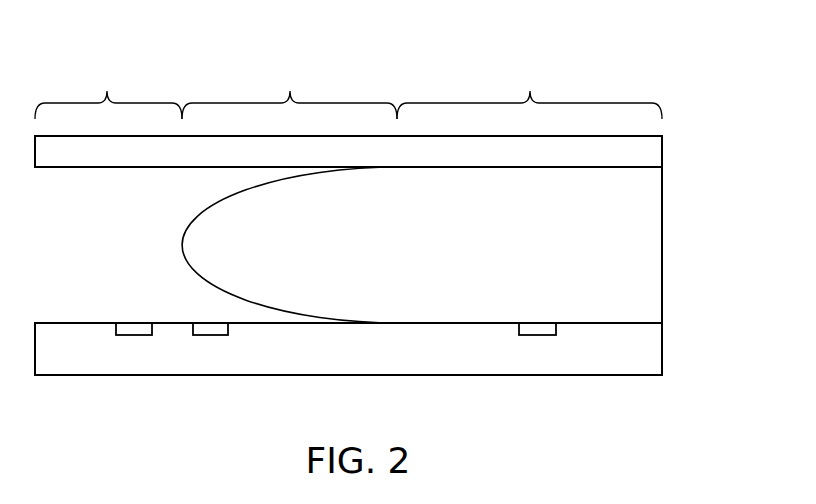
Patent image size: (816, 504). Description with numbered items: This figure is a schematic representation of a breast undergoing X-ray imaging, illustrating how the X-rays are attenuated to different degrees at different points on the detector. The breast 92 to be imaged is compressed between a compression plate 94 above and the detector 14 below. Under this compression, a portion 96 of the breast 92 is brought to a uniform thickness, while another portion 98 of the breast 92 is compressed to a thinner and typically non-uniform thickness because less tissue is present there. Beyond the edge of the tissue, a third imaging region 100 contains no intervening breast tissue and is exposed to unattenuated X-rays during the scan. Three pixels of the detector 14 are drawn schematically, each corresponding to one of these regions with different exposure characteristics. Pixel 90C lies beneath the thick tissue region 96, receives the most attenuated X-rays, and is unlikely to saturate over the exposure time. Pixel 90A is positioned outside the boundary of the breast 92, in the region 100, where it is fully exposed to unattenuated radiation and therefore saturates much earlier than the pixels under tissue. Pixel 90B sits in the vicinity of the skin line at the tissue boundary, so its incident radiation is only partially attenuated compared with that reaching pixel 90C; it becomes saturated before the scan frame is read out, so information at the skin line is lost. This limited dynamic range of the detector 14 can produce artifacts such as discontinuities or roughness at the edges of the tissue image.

The detector 14 is at (663, 343).
The pixel 90A is at (128, 322).
The pixel 90B is at (201, 322).
The pixel 90C is at (534, 337).
The breast 92 is at (663, 245).
The compression plate 94 is at (663, 152).
The portion of the breast at uniform thickness 96 is at (530, 91).
The portion of the breast at thinner thickness 98 is at (290, 91).
The third imaging region 100 is at (107, 91).